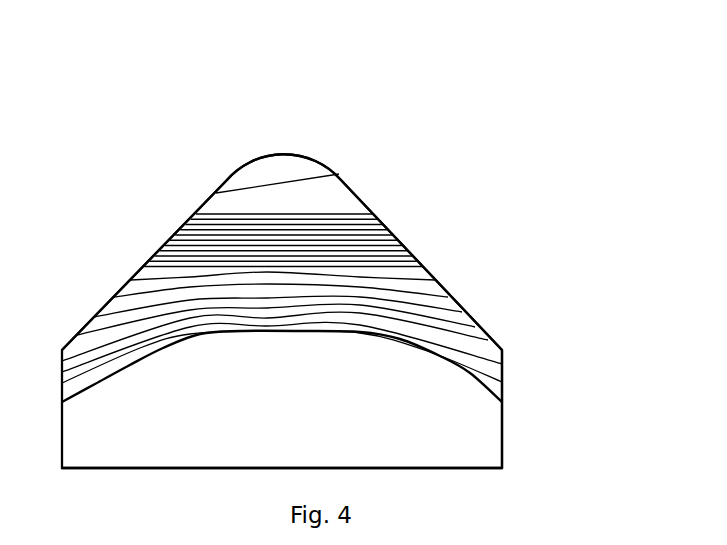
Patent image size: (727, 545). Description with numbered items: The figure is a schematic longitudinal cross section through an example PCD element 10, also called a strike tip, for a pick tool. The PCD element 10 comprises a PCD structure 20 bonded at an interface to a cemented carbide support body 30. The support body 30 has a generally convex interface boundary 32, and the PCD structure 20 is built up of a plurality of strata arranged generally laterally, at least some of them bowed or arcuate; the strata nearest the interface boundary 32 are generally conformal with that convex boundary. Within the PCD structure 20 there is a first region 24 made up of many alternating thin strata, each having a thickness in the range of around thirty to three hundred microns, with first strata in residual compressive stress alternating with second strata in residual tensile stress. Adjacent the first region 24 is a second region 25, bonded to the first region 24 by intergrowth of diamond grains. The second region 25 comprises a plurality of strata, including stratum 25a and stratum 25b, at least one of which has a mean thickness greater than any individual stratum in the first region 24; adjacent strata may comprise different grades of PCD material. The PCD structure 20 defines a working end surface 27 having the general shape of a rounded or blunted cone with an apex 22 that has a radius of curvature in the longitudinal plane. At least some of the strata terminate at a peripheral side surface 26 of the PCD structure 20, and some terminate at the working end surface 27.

The PCD element 10 is at (105, 142).
The PCD structure 20 is at (349, 181).
The apex 22 is at (299, 152).
The first region 24 is at (358, 233).
The second region 25 is at (297, 192).
The stratum 25a is at (243, 199).
The stratum 25b is at (275, 163).
The peripheral side surface 26 is at (502, 365).
The working end surface 27 is at (443, 284).
The cemented carbide support body 30 is at (466, 426).
The interface boundary 32 is at (400, 340).